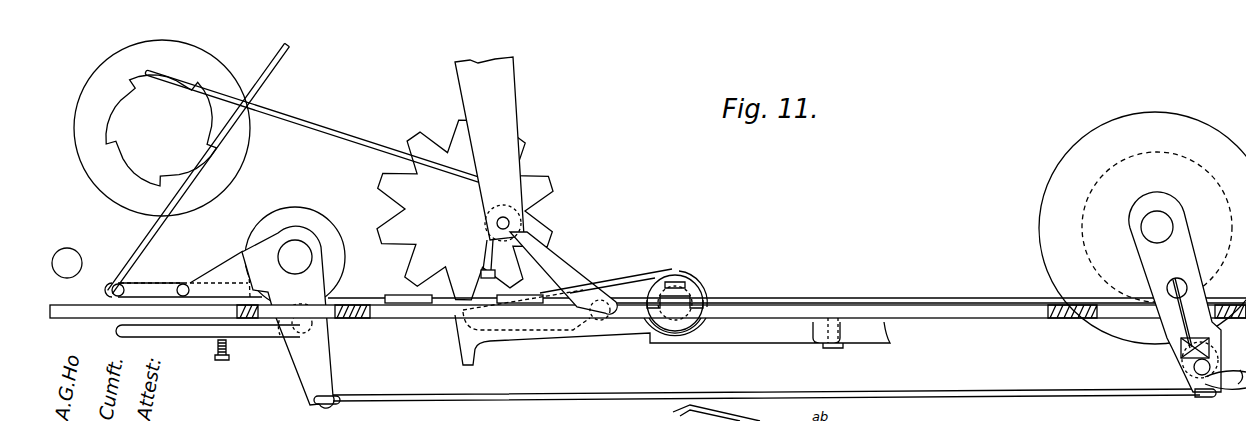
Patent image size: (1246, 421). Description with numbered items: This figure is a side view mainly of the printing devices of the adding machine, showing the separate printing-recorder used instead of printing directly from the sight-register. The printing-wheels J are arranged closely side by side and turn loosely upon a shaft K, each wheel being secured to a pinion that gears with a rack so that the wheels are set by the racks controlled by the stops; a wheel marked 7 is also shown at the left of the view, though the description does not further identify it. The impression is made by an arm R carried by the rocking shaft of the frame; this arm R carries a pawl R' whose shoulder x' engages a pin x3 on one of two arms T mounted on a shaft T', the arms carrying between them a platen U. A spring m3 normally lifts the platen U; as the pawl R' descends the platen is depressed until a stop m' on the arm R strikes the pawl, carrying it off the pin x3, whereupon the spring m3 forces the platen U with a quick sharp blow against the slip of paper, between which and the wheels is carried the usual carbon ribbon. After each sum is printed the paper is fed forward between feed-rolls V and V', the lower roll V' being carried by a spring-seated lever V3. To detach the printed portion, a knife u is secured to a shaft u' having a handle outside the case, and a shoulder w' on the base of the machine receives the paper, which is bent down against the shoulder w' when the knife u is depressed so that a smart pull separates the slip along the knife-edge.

The feed wheel 7 is at (162, 128).
The arm R is at (497, 163).
The pawl R' is at (563, 273).
The printing-wheels J is at (548, 182).
The shaft K is at (485, 218).
The foot m' is at (473, 266).
The pin x' is at (606, 294).
The dashed link x3 is at (526, 313).
The platen U is at (458, 313).
The arms T is at (682, 344).
The shaft T' is at (685, 298).
The spring m3 is at (700, 343).
The feed-roll V is at (298, 257).
The feed-roll V' is at (291, 317).
The spring-seated lever V3 is at (208, 331).
The shoulder w' is at (239, 351).
The knife u is at (183, 274).
The shaft u' is at (79, 263).